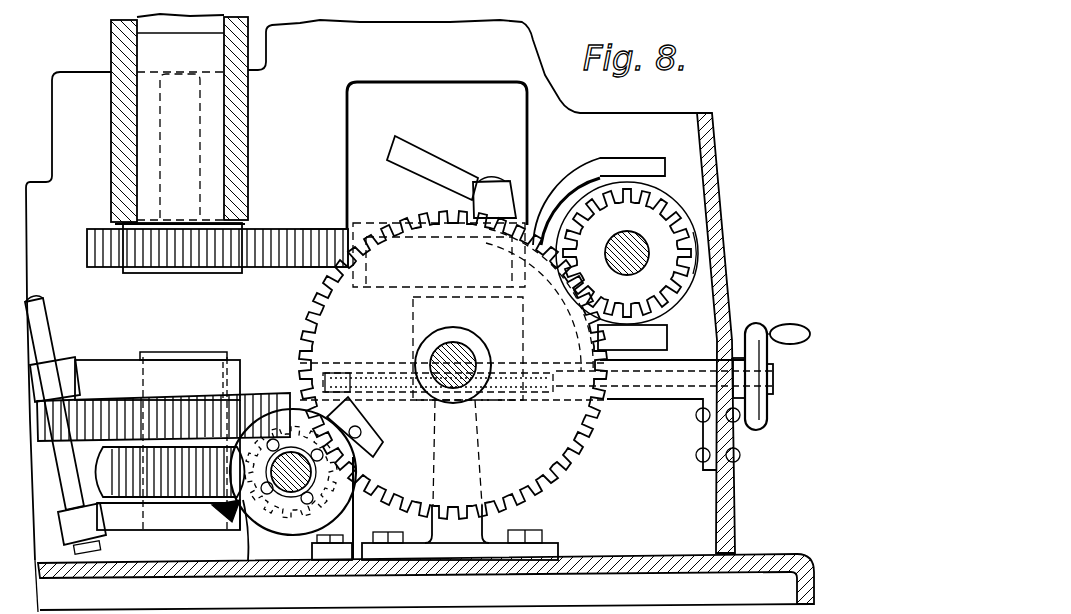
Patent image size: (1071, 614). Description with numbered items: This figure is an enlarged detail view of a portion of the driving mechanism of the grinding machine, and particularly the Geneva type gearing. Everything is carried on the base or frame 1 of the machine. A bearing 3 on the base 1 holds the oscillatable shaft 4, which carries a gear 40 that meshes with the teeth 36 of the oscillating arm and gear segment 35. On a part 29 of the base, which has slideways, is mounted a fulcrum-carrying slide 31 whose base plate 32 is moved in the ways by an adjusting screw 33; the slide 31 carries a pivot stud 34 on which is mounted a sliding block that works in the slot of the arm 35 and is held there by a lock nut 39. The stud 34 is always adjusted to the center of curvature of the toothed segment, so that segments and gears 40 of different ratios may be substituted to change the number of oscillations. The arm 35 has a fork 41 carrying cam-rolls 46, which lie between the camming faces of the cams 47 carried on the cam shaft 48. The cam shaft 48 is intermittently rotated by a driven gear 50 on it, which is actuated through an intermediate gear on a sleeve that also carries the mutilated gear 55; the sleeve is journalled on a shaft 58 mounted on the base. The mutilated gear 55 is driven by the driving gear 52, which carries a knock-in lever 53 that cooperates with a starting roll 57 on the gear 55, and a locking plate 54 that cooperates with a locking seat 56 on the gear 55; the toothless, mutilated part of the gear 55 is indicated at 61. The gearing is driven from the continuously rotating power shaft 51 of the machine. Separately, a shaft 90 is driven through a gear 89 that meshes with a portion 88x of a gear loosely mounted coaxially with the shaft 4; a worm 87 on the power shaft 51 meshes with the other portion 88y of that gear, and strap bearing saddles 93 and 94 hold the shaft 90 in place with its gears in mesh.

The base or frame 1 is at (722, 522).
The bearing 3 is at (241, 147).
The oscillatable shaft 4 is at (150, 130).
The part of the base 29 is at (438, 362).
The fulcrum-carrying slide 31 is at (413, 312).
The base plate 32 is at (477, 412).
The adjusting screw 33 is at (516, 406).
The pivot stud 34 is at (487, 177).
The oscillating arm and gear segment 35 is at (357, 219).
The teeth 36 is at (322, 250).
The lock nut 39 is at (432, 162).
The gear 40 is at (152, 250).
The fork 41 is at (587, 167).
The cam-rolls 46 is at (680, 183).
The cam 47 is at (690, 215).
The cam shaft 48 is at (640, 252).
The driven gear 50 is at (668, 262).
The power shaft 51 is at (289, 535).
The driving gear 52 is at (350, 507).
The knock-in lever 53 is at (243, 538).
The locking plate 54 is at (360, 478).
The mutilated gear 55 is at (560, 462).
The locking seat 56 is at (378, 436).
The starting roll 57 is at (414, 356).
The shaft 58 is at (462, 348).
The mutilated part 61 is at (378, 462).
The worm 87 is at (266, 578).
The portion of gear 88x is at (248, 400).
The portion of gear 88y is at (170, 489).
The gear 89 is at (67, 420).
The shaft 90 is at (40, 327).
The strap bearing saddle 93 is at (68, 373).
The strap bearing saddle 94 is at (185, 522).